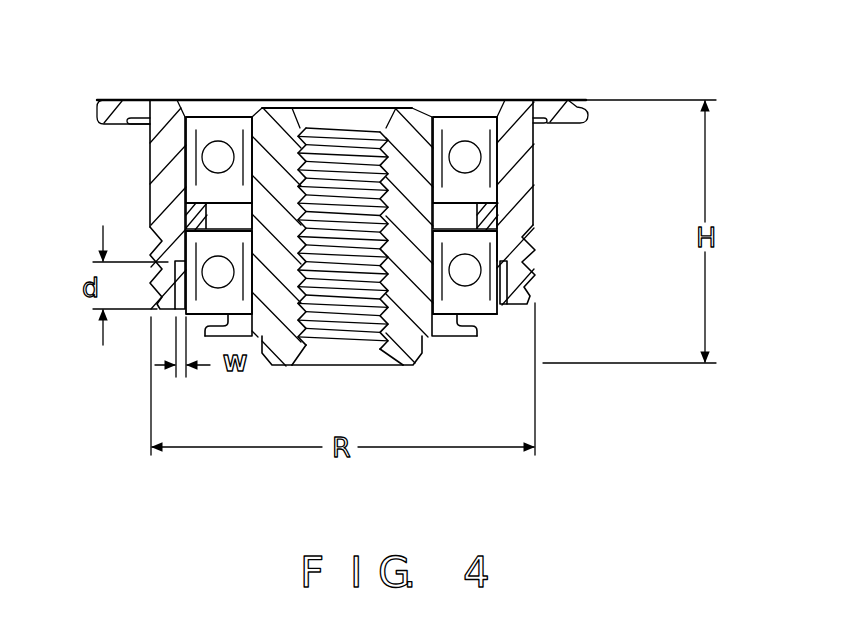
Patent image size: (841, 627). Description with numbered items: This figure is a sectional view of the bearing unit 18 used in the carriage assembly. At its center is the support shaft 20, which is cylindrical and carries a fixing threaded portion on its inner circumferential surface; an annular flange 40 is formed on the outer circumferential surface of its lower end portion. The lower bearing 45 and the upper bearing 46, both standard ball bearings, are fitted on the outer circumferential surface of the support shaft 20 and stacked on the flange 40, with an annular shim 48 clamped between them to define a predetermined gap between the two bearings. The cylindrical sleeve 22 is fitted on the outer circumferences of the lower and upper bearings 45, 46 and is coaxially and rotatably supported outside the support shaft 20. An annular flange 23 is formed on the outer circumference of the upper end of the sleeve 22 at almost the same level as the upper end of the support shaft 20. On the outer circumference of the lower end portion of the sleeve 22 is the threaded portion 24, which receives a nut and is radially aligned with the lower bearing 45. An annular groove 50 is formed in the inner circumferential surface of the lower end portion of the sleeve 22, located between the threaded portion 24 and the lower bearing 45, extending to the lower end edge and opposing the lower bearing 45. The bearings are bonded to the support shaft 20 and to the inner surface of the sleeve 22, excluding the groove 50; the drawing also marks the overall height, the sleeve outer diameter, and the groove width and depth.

The bearing unit 18 is at (261, 97).
The annular flange 23 is at (107, 99).
The support shaft 20 is at (408, 127).
The upper bearing 46 is at (477, 128).
The cylindrical sleeve 22 is at (523, 165).
The annular shim 48 is at (190, 211).
The threaded portion 24 is at (534, 256).
The annular groove 50 is at (528, 291).
The lower bearing 45 is at (483, 306).
The annular flange 40 is at (458, 328).